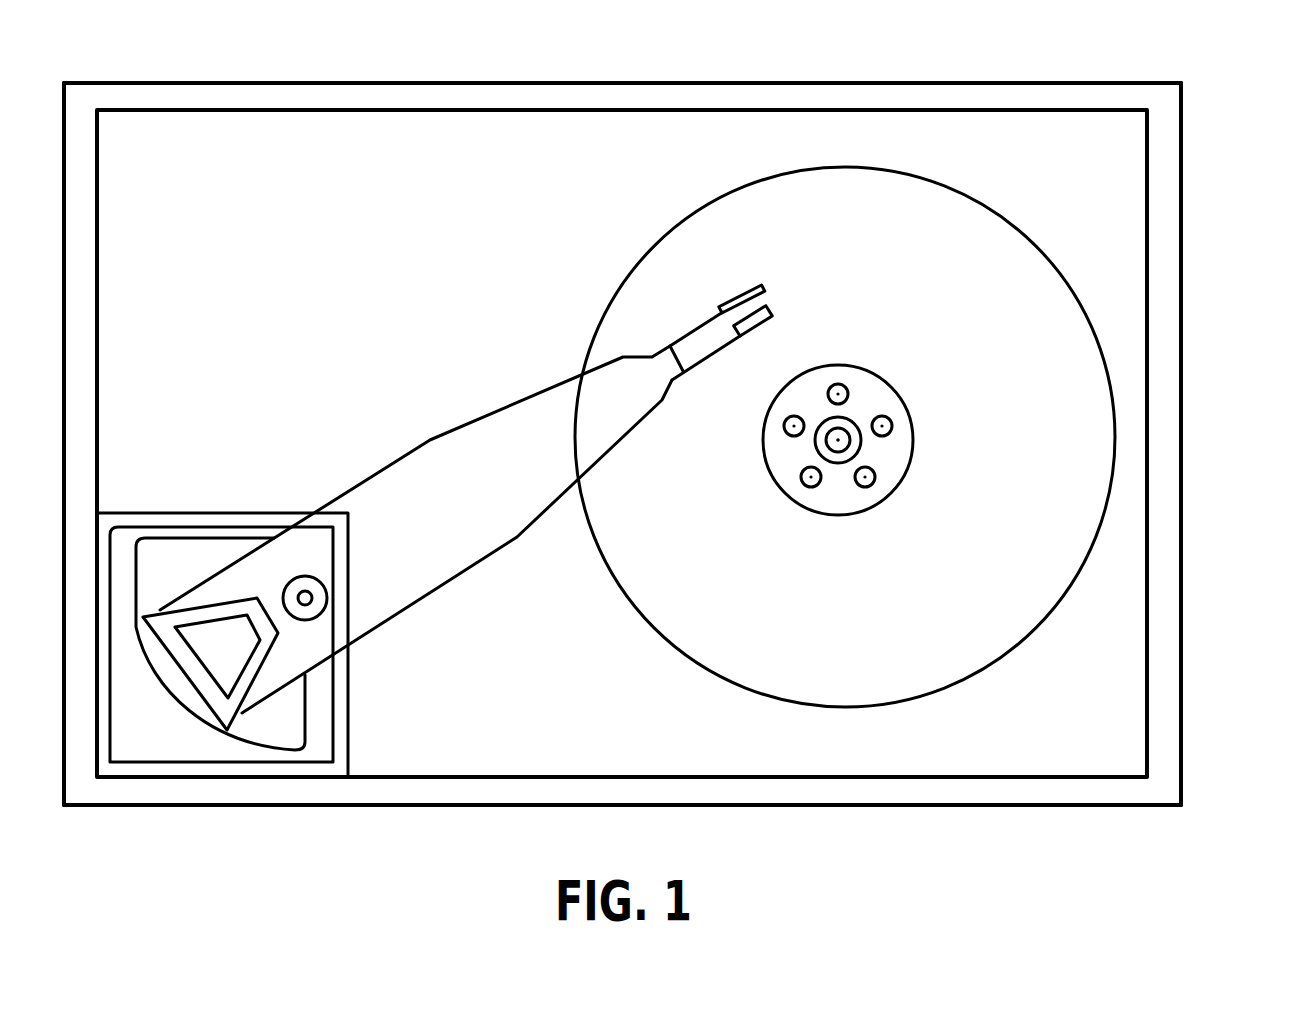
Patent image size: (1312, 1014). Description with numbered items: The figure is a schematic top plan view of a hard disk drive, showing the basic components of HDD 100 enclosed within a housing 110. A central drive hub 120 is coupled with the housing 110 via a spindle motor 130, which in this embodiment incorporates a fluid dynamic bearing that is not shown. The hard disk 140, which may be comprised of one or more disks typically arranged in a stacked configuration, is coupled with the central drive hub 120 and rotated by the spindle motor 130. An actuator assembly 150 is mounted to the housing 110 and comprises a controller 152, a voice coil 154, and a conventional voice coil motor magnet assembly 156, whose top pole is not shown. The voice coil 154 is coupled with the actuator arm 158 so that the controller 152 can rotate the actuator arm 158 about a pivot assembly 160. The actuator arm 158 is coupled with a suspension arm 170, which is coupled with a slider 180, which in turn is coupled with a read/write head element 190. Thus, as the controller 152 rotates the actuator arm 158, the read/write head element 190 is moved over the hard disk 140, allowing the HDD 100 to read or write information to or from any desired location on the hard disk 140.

The HDD 100 is at (657, 52).
The housing 110 is at (1157, 108).
The central drive hub 120 is at (890, 462).
The spindle motor 130 is at (850, 430).
The hard disk 140 is at (928, 222).
The actuator assembly 150 is at (337, 708).
The controller 152 is at (118, 548).
The voice coil 154 is at (178, 652).
The voice coil motor magnet assembly 156 is at (222, 555).
The actuator arm 158 is at (435, 475).
The pivot assembly 160 is at (318, 608).
The suspension arm 170 is at (693, 347).
The slider 180 is at (757, 292).
The read/write head element 190 is at (773, 302).